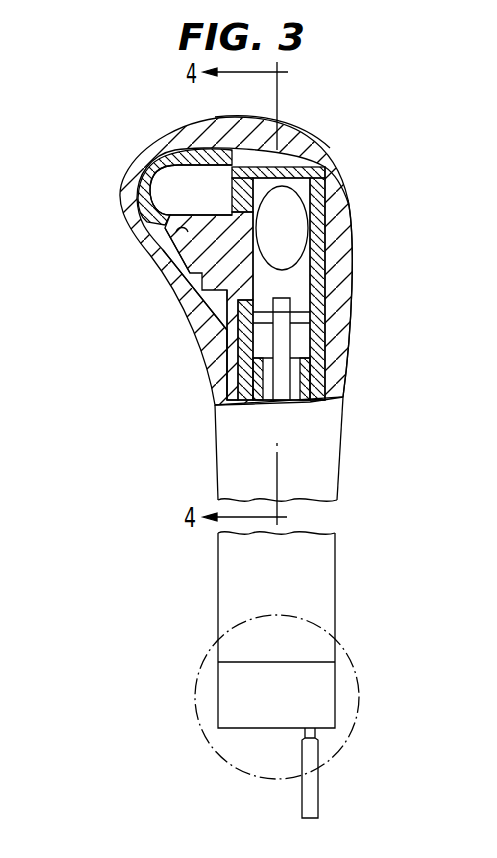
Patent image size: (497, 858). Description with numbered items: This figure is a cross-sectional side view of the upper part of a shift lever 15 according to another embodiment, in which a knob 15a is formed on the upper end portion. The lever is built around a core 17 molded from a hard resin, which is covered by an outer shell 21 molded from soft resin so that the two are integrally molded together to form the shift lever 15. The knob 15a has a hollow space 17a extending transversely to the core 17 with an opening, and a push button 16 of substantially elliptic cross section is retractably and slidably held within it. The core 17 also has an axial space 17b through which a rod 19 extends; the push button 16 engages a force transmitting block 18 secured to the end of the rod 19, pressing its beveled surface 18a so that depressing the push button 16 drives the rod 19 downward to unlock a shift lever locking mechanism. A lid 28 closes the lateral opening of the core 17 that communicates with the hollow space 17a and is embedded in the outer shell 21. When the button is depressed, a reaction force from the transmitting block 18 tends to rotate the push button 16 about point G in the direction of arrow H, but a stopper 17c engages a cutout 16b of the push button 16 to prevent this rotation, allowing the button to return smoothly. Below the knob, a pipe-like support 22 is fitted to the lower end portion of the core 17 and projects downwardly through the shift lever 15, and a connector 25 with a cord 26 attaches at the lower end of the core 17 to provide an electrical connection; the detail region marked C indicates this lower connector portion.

The shift lever 15 is at (372, 488).
The knob 15a is at (234, 254).
The push button 16 is at (163, 187).
The cutout 16b is at (153, 146).
The core 17 is at (140, 203).
The hollow space 17a is at (205, 215).
The axial space 17b is at (233, 347).
The stopper 17c is at (182, 230).
The force transmitting block 18 is at (300, 283).
The beveled surface 18a is at (298, 238).
The rod 19 is at (283, 340).
The outer shell 21 is at (350, 213).
The support 22 is at (238, 385).
The connector 25 is at (218, 689).
The cord 26 is at (315, 800).
The lid 28 is at (255, 181).
The point G is at (178, 277).
The arrow H is at (250, 147).
The detail circle C is at (208, 757).